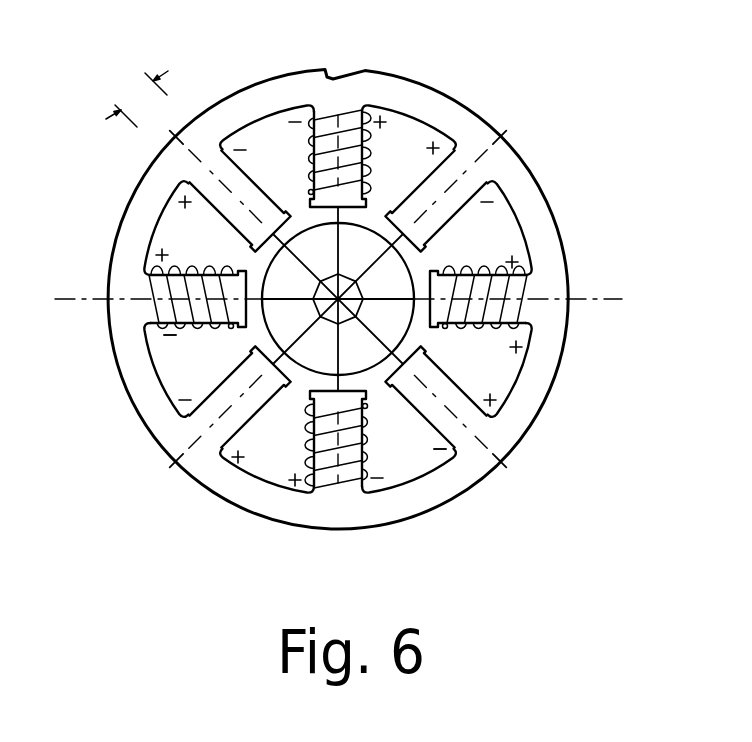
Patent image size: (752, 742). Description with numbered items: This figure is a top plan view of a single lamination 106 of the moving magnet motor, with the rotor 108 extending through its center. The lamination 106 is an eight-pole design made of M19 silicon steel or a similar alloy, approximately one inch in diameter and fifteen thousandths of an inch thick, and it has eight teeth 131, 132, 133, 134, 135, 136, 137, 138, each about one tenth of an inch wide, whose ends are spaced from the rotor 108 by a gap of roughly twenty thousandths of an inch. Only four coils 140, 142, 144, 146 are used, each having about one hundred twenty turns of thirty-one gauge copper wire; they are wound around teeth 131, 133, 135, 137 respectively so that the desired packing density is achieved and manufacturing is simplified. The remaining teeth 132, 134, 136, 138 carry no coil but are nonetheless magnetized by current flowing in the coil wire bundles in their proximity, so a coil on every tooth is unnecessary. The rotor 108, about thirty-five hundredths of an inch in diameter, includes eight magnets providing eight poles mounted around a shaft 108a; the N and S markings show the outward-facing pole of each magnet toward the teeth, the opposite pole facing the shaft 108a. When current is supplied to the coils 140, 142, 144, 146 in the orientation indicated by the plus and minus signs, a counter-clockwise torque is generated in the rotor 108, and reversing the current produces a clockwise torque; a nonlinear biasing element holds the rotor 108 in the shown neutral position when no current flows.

The lamination 106 is at (543, 188).
The rotor 108 is at (268, 330).
The shaft 108a is at (353, 287).
The tooth 131 is at (309, 115).
The tooth 132 is at (438, 143).
The tooth 133 is at (510, 262).
The tooth 134 is at (500, 410).
The tooth 135 is at (390, 484).
The tooth 136 is at (240, 463).
The tooth 137 is at (235, 273).
The tooth 138 is at (175, 197).
The coil 140 is at (373, 117).
The coil 142 is at (518, 347).
The coil 144 is at (413, 440).
The coil 146 is at (170, 330).